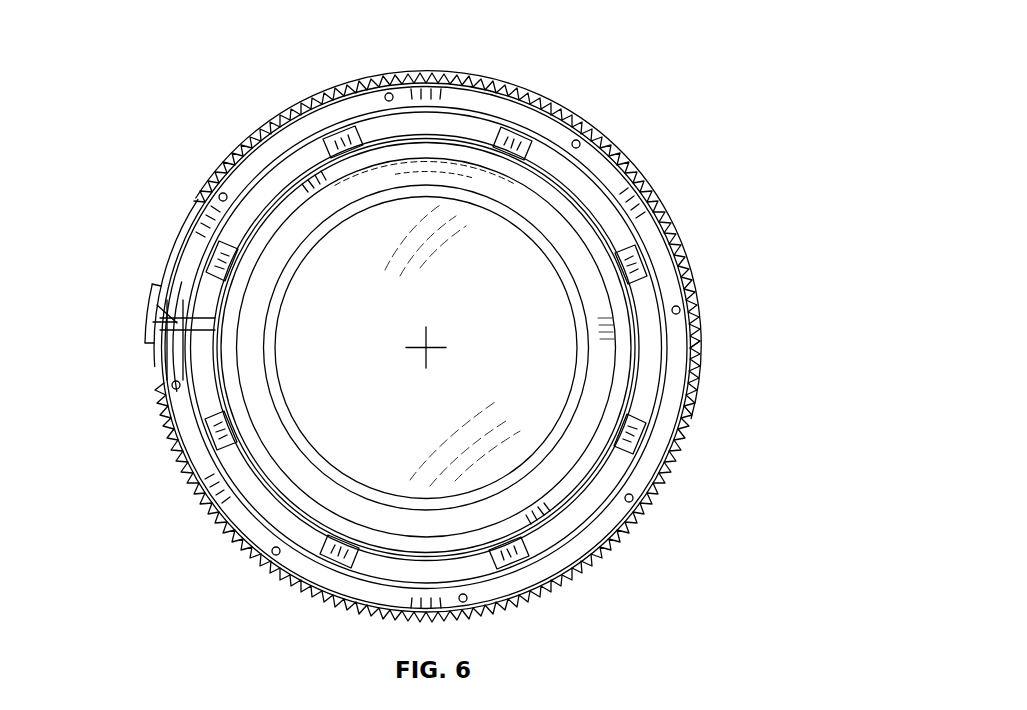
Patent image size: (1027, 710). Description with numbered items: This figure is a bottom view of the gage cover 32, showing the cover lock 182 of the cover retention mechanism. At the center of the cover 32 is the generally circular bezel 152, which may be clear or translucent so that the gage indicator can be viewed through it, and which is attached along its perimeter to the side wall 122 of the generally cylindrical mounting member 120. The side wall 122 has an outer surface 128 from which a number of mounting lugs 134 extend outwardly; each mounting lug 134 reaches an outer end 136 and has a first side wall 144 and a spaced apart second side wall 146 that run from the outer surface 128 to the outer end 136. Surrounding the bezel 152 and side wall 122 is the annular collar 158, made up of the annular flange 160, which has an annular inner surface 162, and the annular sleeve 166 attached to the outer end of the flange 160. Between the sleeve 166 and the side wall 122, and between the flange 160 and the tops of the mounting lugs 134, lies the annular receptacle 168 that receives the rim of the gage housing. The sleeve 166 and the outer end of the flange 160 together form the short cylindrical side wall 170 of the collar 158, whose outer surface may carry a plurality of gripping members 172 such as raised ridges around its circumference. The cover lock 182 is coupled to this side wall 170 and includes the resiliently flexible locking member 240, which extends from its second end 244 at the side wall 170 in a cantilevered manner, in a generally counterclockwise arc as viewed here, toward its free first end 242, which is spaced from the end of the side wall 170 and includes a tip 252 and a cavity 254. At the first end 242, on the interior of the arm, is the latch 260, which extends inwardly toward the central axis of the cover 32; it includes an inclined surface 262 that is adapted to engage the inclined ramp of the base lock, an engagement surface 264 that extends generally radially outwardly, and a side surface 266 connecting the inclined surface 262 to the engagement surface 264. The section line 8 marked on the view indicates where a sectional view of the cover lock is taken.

The cover 32 is at (636, 102).
The mounting member 120 is at (470, 132).
The side wall 122 is at (537, 192).
The outer surface 128 is at (583, 203).
The mounting lug 134 is at (522, 145).
The outer end 136 is at (640, 262).
The first side wall 144 is at (626, 247).
The second side wall 146 is at (641, 291).
The bezel 152 is at (345, 422).
The collar 158 is at (223, 532).
The flange 160 is at (198, 459).
The inner surface 162 is at (178, 414).
The sleeve 166 is at (287, 580).
The receptacle 168 is at (350, 590).
The side wall 170 is at (240, 548).
The gripping members 172 is at (200, 507).
The cover lock 182 is at (97, 208).
The locking member 240 is at (168, 233).
The first end 242 is at (150, 292).
The second end 244 is at (188, 212).
The tip 252 is at (155, 308).
The cavity 254 is at (152, 326).
The latch 260 is at (188, 322).
The inclined surface 262 is at (175, 345).
The engagement surface 264 is at (195, 278).
The side surface 266 is at (180, 333).
The section line 8- 8 is at (210, 174).